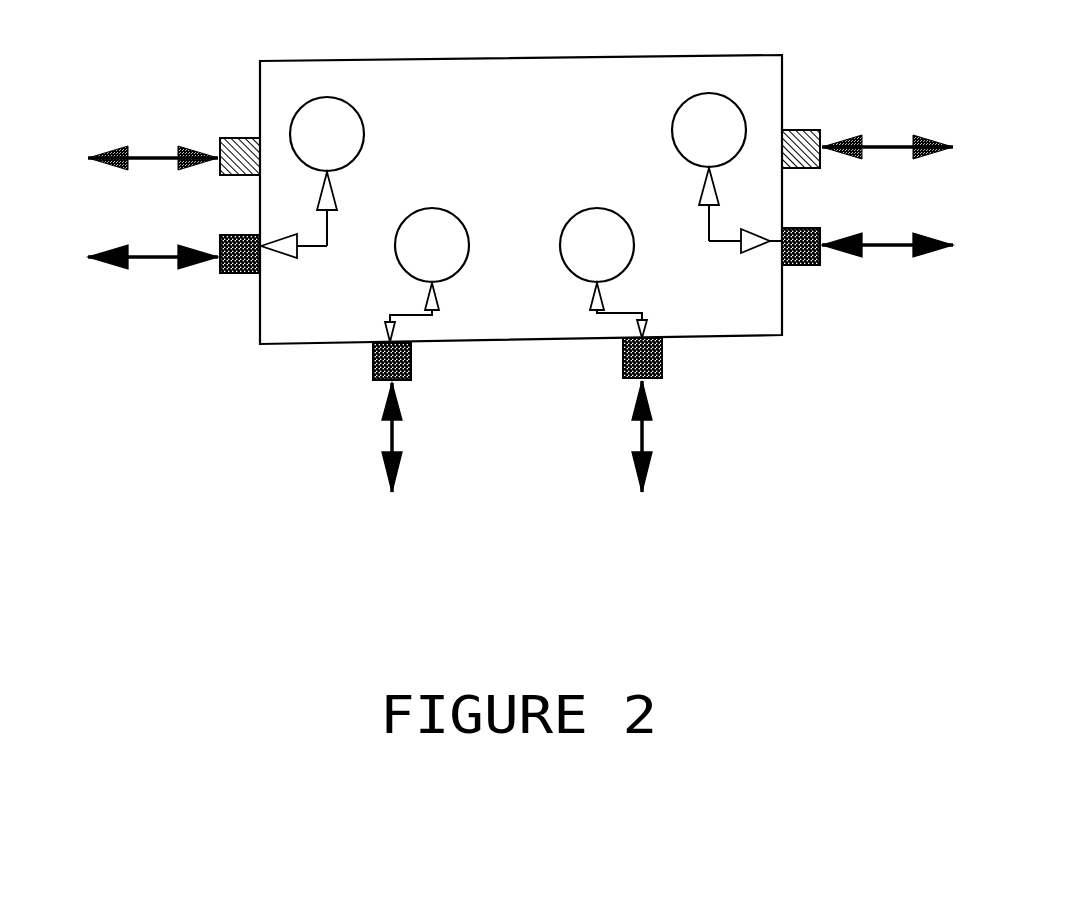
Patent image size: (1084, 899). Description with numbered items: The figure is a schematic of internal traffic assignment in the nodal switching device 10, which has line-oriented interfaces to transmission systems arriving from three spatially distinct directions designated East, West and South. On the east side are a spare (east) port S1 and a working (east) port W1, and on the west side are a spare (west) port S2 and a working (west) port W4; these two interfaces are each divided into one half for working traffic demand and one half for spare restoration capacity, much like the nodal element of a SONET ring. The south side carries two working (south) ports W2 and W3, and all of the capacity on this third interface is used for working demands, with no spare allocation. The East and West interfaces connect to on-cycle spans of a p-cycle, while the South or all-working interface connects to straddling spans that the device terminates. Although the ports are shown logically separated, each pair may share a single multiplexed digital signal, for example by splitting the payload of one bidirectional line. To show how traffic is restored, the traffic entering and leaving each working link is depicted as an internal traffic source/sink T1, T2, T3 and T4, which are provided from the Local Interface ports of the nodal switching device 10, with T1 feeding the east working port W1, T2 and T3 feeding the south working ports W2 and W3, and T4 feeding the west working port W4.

The nodal switching device 10 is at (813, 46).
The spare (east) port S1 is at (174, 127).
The spare (west) port S2 is at (867, 123).
The working (east) port W1 is at (174, 277).
The working (south) port W2 is at (361, 417).
The working (south) port W3 is at (674, 415).
The working (west) port W4 is at (867, 273).
The internal traffic source/sink T1 is at (312, 177).
The internal traffic source/sink T2 is at (427, 275).
The internal traffic source/sink T3 is at (603, 273).
The internal traffic source/sink T4 is at (727, 173).